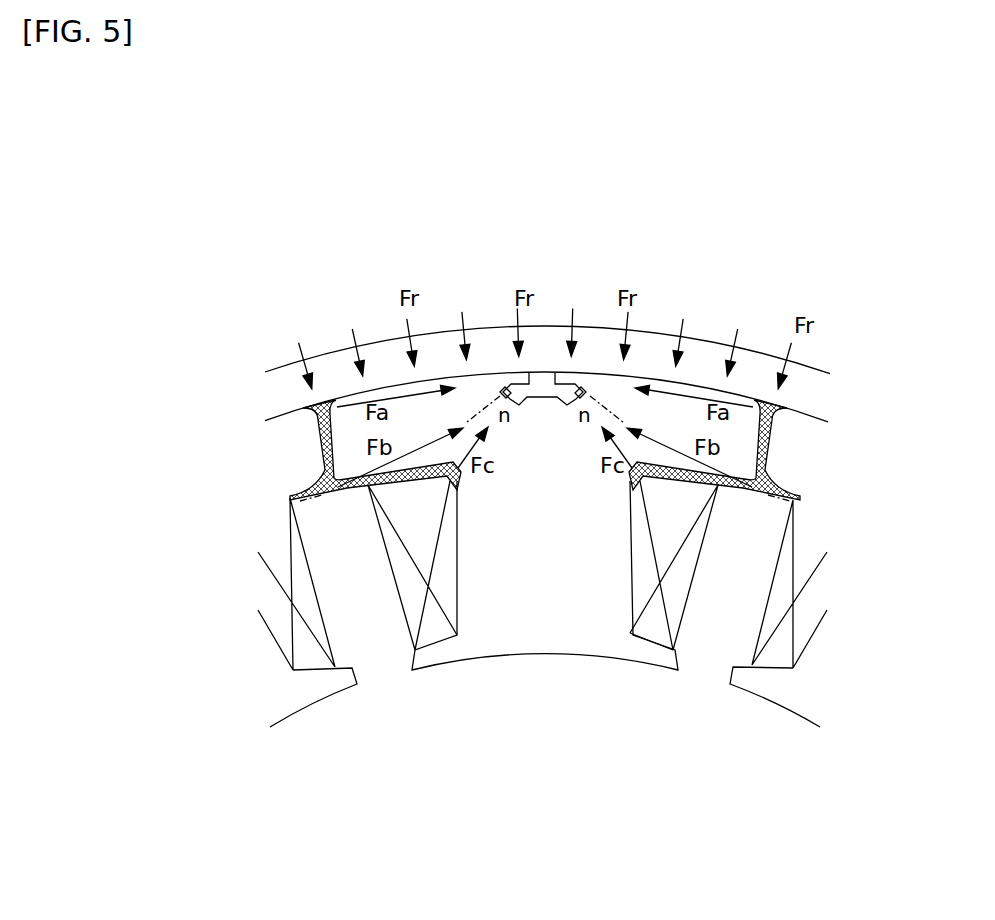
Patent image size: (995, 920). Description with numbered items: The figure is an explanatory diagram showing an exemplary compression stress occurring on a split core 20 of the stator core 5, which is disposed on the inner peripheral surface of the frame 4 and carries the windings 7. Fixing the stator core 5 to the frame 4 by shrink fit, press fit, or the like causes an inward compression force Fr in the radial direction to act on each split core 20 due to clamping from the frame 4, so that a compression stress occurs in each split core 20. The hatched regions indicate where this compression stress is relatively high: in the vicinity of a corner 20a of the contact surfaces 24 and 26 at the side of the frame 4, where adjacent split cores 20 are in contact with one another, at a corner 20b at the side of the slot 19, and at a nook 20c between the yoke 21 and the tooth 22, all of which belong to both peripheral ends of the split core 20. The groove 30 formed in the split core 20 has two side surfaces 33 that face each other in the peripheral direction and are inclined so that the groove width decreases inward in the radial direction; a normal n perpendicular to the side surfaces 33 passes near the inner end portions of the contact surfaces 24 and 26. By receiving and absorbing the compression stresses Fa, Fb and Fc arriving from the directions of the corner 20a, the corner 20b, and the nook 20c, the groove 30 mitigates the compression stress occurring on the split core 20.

The frame 4 is at (705, 358).
The stator core 5 is at (398, 376).
The windings 7 is at (430, 622).
The slot 19 is at (350, 490).
The split core 20 is at (311, 716).
The corner 20a is at (313, 404).
The corner 20b is at (322, 477).
The nook 20c is at (628, 473).
The yoke 21 is at (492, 385).
The tooth 22 is at (528, 556).
The contact surface 24 is at (762, 403).
The contact surface 26 is at (327, 402).
The groove 30 is at (546, 378).
The side surfaces 33 is at (552, 466).